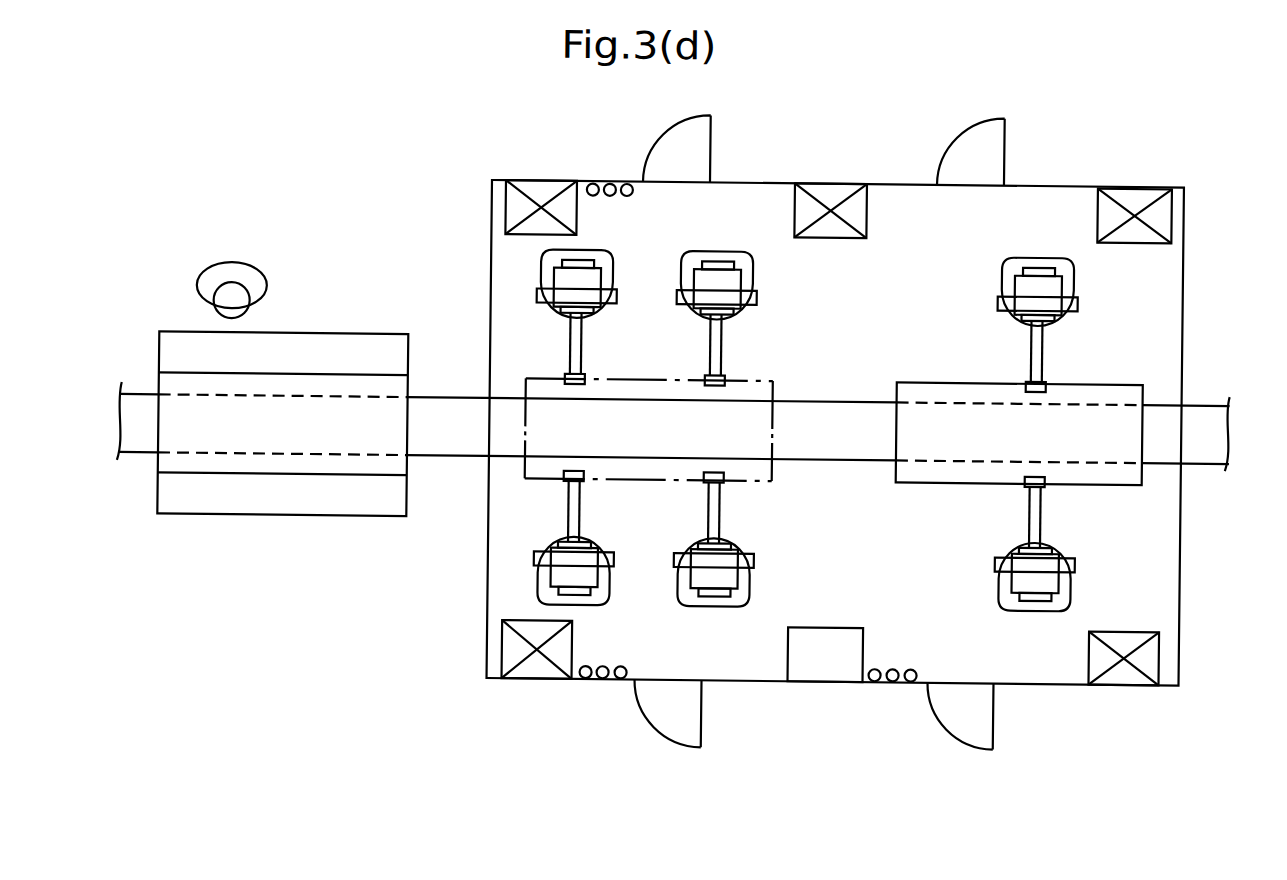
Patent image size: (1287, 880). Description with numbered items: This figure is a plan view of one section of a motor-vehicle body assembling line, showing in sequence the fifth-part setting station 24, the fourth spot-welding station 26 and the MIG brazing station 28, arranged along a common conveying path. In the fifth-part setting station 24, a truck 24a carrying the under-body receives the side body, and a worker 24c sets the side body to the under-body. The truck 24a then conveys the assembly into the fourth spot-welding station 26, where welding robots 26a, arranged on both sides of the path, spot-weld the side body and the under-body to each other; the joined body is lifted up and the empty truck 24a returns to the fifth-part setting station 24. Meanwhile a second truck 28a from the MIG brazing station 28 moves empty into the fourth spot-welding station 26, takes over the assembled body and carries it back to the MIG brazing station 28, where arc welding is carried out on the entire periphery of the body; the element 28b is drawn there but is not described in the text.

The fifth-part setting station 24 is at (272, 550).
The truck 24a is at (310, 377).
The worker 24c is at (244, 265).
The fourth spot-welding station 26 is at (584, 701).
The welding robots 26a is at (537, 574).
The MIG brazing station 28 is at (1054, 689).
The truck 28a is at (1091, 480).
The robot hand 28b is at (1076, 576).